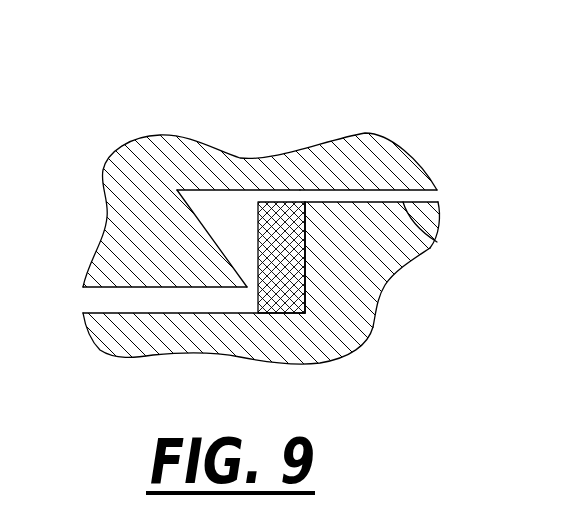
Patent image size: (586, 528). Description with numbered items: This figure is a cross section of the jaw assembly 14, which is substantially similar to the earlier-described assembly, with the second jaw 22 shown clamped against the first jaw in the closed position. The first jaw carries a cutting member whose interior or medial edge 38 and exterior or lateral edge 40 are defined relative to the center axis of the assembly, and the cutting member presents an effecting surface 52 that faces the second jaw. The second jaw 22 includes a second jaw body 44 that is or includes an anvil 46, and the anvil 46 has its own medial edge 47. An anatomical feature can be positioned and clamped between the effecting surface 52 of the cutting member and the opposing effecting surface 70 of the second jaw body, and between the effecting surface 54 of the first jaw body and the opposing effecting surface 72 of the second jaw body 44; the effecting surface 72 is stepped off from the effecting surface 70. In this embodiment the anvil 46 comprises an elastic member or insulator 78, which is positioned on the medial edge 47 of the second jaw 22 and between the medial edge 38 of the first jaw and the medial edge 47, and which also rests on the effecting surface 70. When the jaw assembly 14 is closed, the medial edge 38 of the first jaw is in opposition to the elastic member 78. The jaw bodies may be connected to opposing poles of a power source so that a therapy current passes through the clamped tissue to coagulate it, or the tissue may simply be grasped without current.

The jaw assembly 14 is at (138, 96).
The second jaw 22 is at (172, 362).
The medial edge 38 is at (216, 238).
The lateral edge 40 is at (248, 178).
The second jaw body 44 is at (377, 248).
The anvil 46 is at (298, 265).
The medial edge 47 is at (280, 257).
The effecting surface 52 is at (117, 287).
The effecting surface 54 is at (330, 188).
The effecting surface 70 is at (113, 313).
The effecting surface 72 is at (438, 240).
The elastic member or insulator 78 is at (283, 272).